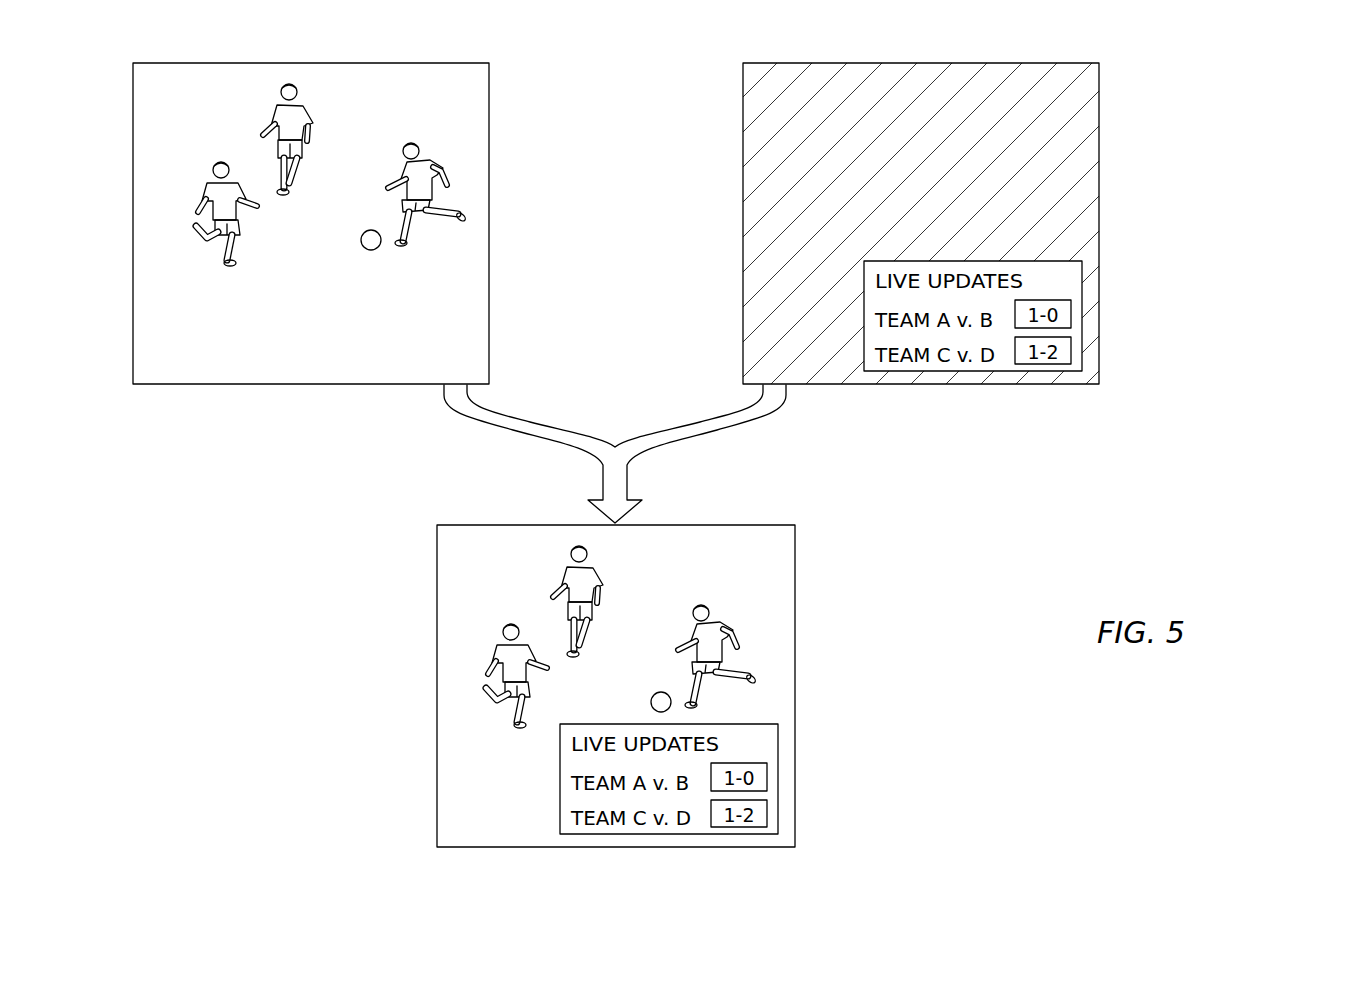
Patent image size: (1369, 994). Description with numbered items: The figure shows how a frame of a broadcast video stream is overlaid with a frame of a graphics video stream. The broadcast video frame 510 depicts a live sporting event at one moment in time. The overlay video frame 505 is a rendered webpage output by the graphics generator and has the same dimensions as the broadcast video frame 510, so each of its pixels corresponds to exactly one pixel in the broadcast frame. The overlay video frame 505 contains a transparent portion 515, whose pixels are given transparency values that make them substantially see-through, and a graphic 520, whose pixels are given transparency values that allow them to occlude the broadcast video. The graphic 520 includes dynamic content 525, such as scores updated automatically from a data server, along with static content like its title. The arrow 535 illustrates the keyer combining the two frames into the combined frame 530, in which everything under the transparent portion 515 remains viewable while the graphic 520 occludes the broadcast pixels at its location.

The overlay video frame 505 is at (920, 63).
The broadcast video frame 510 is at (313, 63).
The transparent portion 515 is at (768, 200).
The graphic 520 is at (1082, 277).
The dynamic content 525 is at (1071, 315).
The combined frame 530 is at (437, 687).
The arrow 535 is at (690, 446).